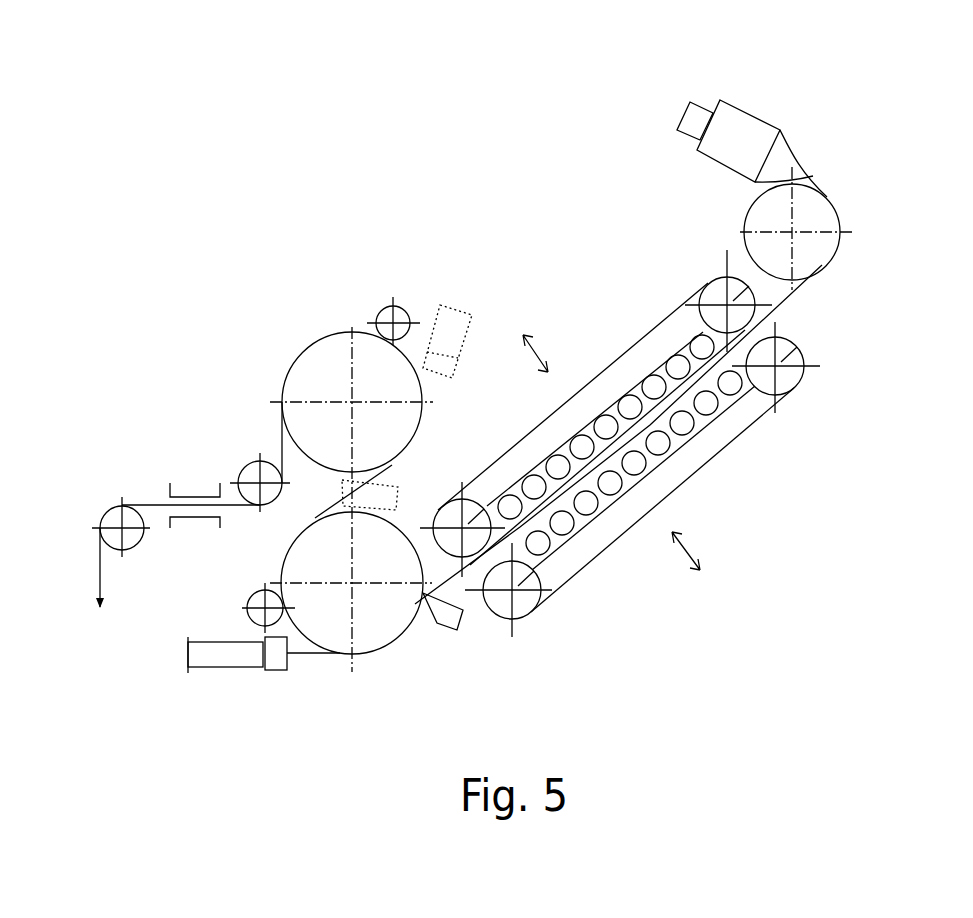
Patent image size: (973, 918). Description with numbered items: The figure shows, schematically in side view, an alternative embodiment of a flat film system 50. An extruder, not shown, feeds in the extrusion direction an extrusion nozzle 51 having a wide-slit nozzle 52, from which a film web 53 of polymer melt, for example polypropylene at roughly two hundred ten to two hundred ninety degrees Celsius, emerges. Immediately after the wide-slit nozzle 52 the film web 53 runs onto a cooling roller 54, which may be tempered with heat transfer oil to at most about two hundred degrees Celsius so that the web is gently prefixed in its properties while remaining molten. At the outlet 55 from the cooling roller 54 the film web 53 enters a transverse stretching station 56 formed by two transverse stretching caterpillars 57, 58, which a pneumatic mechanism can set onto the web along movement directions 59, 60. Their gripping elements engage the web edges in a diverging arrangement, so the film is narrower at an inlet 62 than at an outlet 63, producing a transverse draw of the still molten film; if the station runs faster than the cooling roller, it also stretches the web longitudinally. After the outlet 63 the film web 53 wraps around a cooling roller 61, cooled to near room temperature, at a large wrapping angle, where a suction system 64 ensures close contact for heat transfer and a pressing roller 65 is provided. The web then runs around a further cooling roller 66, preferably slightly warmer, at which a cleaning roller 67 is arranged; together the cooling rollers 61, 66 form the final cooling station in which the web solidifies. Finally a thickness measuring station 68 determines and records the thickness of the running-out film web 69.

The flat film system 50 is at (580, 158).
The extrusion nozzle 51 is at (744, 108).
The wide-slit nozzle 52 is at (797, 161).
The film web 53 is at (812, 178).
The cooling roller 54 is at (830, 224).
The outlet 55 is at (795, 308).
The transverse stretching station 56 is at (709, 520).
The transverse stretching caterpillar 57 is at (677, 313).
The transverse stretching caterpillar 58 is at (735, 428).
The movement direction 59 is at (538, 348).
The movement direction 60 is at (680, 568).
The cooling roller 61 is at (386, 626).
The inlet 62 is at (789, 322).
The outlet 63 is at (473, 601).
The suction system 64 is at (216, 648).
The pressing roller 65 is at (265, 600).
The cooling roller 66 is at (327, 358).
The cleaning roller 67 is at (405, 310).
The thickness measuring station 68 is at (153, 490).
The running-out film web 69 is at (88, 602).